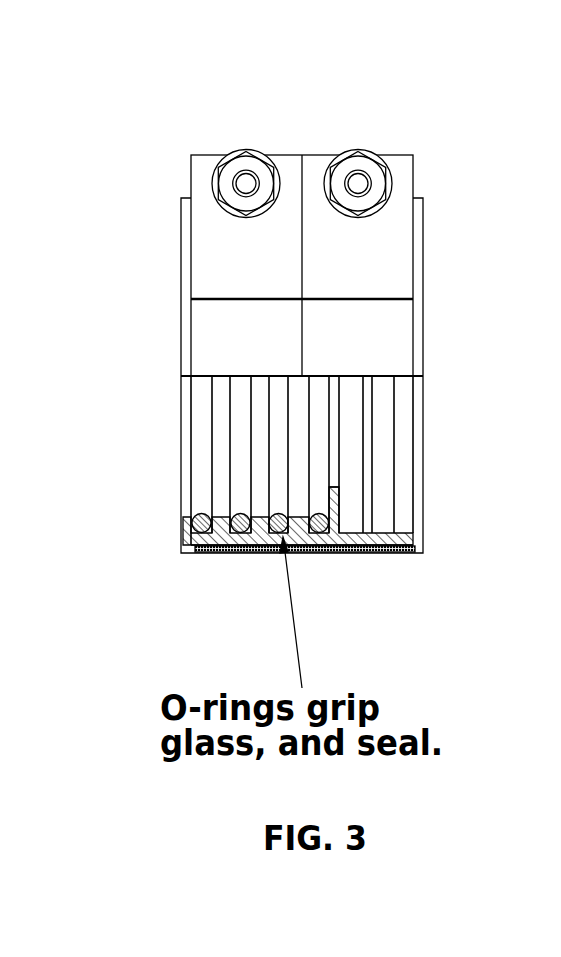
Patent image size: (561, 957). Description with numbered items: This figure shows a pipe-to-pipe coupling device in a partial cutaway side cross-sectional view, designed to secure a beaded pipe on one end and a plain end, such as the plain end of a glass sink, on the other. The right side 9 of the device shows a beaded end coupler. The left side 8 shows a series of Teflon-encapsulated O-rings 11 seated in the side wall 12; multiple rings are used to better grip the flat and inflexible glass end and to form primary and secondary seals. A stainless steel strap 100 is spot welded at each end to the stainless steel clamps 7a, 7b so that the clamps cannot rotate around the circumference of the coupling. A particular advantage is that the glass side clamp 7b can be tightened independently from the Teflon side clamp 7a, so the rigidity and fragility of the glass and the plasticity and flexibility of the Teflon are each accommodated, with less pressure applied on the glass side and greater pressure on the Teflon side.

The Teflon side clamp 7a is at (258, 134).
The glass side clamp 7b is at (372, 134).
The left side 8 is at (222, 335).
The right side 9 is at (383, 343).
The Teflon-encapsulated O-rings 11 is at (302, 501).
The side wall 12 is at (221, 532).
The stainless steel strap 100 is at (372, 564).